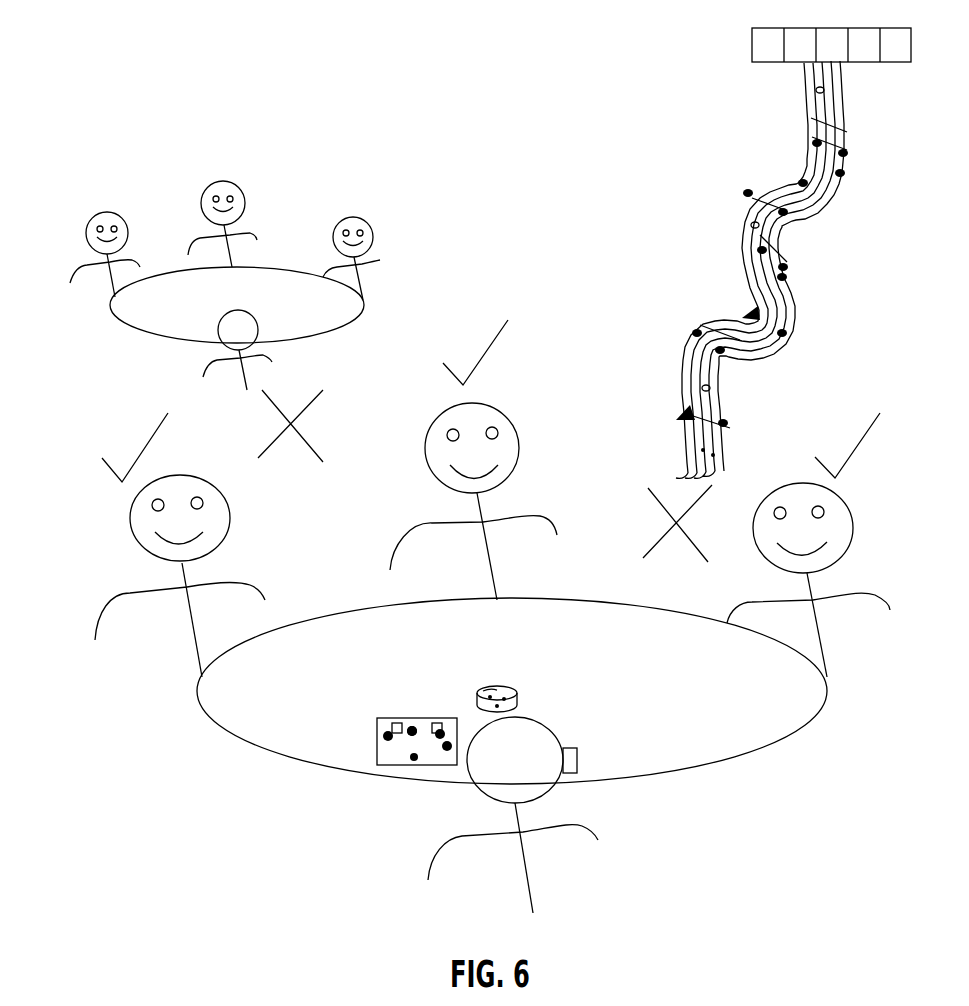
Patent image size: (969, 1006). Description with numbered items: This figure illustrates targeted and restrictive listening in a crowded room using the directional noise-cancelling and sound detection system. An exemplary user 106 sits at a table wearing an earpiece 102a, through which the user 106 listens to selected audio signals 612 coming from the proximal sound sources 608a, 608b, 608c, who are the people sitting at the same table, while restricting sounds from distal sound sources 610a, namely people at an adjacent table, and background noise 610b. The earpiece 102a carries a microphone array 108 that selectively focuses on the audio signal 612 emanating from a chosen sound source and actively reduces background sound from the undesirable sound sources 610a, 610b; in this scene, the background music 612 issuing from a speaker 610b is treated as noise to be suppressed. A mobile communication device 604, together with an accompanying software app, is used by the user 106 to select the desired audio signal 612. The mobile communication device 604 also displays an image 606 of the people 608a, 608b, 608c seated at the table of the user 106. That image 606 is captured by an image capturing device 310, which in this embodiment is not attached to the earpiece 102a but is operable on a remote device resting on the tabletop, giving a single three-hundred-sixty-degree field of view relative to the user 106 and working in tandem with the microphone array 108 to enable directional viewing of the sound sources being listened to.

The distal sound source 610a is at (390, 289).
The speaker 610b is at (750, 52).
The audio signal 612 is at (706, 188).
The proximal sound source 608a is at (130, 530).
The proximal sound source 608b is at (520, 430).
The proximal sound source 608c is at (845, 523).
The user 106 is at (500, 793).
The earpiece 102a is at (577, 760).
The microphone array 108 is at (510, 687).
The image capturing device 310 is at (487, 688).
The image 606 is at (378, 740).
The mobile communication device 604 is at (402, 745).